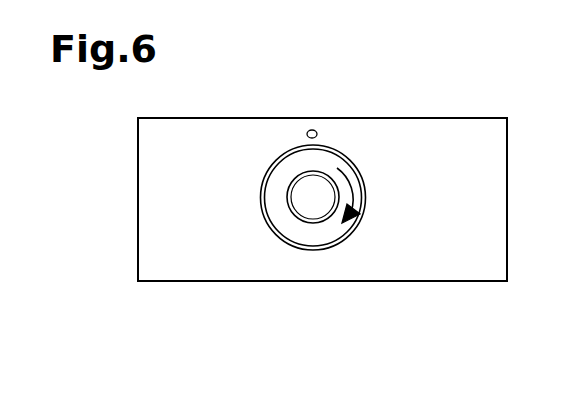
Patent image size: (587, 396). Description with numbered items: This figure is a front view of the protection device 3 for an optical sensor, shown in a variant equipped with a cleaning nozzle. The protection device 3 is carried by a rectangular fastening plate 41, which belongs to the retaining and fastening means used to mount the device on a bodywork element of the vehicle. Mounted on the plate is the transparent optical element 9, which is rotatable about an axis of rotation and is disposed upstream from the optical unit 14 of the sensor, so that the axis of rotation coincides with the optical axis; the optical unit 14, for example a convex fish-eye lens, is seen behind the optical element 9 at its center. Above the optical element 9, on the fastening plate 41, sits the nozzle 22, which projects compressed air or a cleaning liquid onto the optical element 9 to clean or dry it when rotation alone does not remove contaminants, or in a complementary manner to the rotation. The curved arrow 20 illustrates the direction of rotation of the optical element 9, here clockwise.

The protection device 3 is at (126, 243).
The optical element 9 is at (283, 185).
The optical unit 14 is at (306, 206).
The arrow 20 is at (352, 187).
The nozzle 22 is at (313, 129).
The fastening plate 41 is at (158, 197).